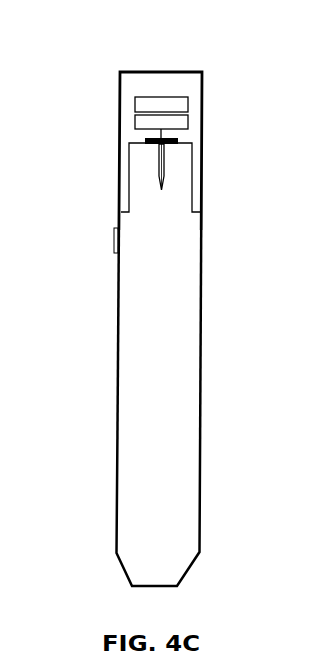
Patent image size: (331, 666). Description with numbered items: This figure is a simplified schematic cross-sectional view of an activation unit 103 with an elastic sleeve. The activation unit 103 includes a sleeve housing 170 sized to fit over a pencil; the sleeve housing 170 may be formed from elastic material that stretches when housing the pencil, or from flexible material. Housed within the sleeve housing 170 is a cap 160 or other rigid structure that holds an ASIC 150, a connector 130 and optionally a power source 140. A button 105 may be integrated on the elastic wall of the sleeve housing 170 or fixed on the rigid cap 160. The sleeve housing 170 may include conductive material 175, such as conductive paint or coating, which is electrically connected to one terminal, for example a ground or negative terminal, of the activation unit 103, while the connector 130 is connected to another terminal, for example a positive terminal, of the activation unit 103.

The activation unit 103 is at (218, 308).
The button 105 is at (118, 243).
The connector 130 is at (165, 173).
The power source 140 is at (172, 97).
The ASIC 150 is at (188, 123).
The cap 160 is at (119, 142).
The sleeve housing 170 is at (118, 355).
The conductive material 175 is at (116, 507).